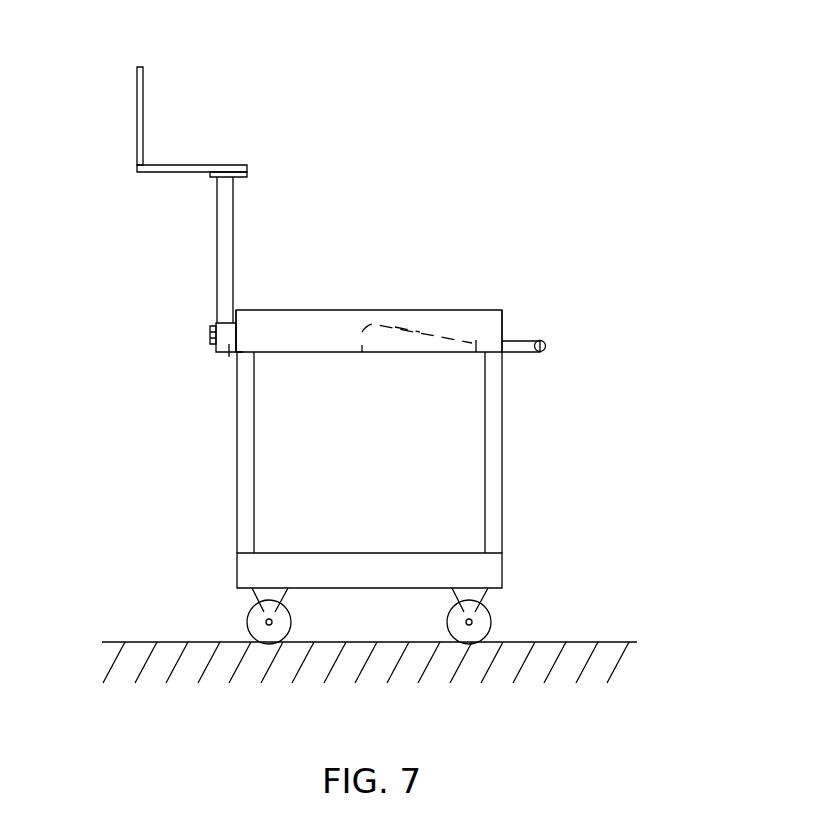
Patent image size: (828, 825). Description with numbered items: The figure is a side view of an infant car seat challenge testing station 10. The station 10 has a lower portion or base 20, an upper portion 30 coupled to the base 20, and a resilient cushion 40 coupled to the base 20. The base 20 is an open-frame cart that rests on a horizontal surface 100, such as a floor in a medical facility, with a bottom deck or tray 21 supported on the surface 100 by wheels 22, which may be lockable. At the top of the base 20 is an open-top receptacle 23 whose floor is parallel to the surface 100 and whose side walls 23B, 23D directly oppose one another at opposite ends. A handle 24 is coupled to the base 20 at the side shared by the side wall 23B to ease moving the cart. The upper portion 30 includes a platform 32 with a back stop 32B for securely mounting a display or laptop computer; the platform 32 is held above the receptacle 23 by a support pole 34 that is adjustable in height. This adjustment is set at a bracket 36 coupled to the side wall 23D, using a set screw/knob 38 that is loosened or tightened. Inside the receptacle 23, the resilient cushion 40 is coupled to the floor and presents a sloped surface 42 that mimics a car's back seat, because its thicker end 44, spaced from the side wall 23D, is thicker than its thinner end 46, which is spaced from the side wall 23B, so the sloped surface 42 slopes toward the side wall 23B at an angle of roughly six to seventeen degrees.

The infant car seat challenge testing station 10 is at (568, 93).
The base 20 is at (668, 303).
The bottom deck or tray 21 is at (347, 594).
The wheels 22 is at (258, 627).
The open-top receptacle 23 is at (308, 309).
The side wall 23B is at (504, 324).
The side wall 23D is at (244, 322).
The handle 24 is at (545, 353).
The upper portion 30 is at (85, 55).
The platform 32 is at (200, 165).
The back stop 32B is at (143, 73).
The support pole 34 is at (220, 260).
The bracket 36 is at (226, 358).
The set screw/knob 38 is at (211, 345).
The resilient cushion 40 is at (440, 333).
The sloped surface 42 is at (406, 330).
The thicker end 44 is at (370, 324).
The thinner end 46 is at (476, 340).
The horizontal surface 100 is at (580, 642).